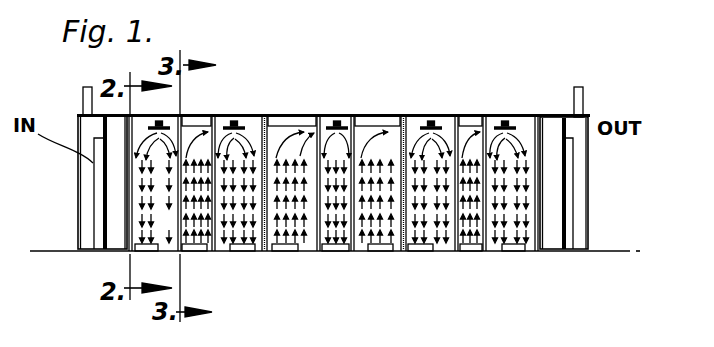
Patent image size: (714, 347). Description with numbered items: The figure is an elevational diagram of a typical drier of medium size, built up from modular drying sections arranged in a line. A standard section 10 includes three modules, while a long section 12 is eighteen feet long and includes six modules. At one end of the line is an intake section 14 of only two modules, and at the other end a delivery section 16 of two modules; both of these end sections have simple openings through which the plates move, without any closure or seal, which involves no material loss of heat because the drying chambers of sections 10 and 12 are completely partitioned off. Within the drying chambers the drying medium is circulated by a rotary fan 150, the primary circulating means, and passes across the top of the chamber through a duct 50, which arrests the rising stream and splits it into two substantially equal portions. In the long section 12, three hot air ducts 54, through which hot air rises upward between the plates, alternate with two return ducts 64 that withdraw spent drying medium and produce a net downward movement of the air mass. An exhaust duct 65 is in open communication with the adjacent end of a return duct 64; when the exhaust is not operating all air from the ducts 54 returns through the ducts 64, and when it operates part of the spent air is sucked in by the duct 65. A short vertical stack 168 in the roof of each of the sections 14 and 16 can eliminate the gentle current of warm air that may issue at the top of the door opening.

The standard section 10 is at (238, 101).
The long section 12 is at (469, 114).
The intake section 14 is at (93, 172).
The delivery section 16 is at (580, 193).
The duct 50 is at (240, 95).
The hot air duct 54 is at (197, 252).
The return duct 64 is at (333, 253).
The exhaust duct 65 is at (513, 252).
The rotary fan 150 is at (100, 210).
The vertical stack 168 is at (83, 100).